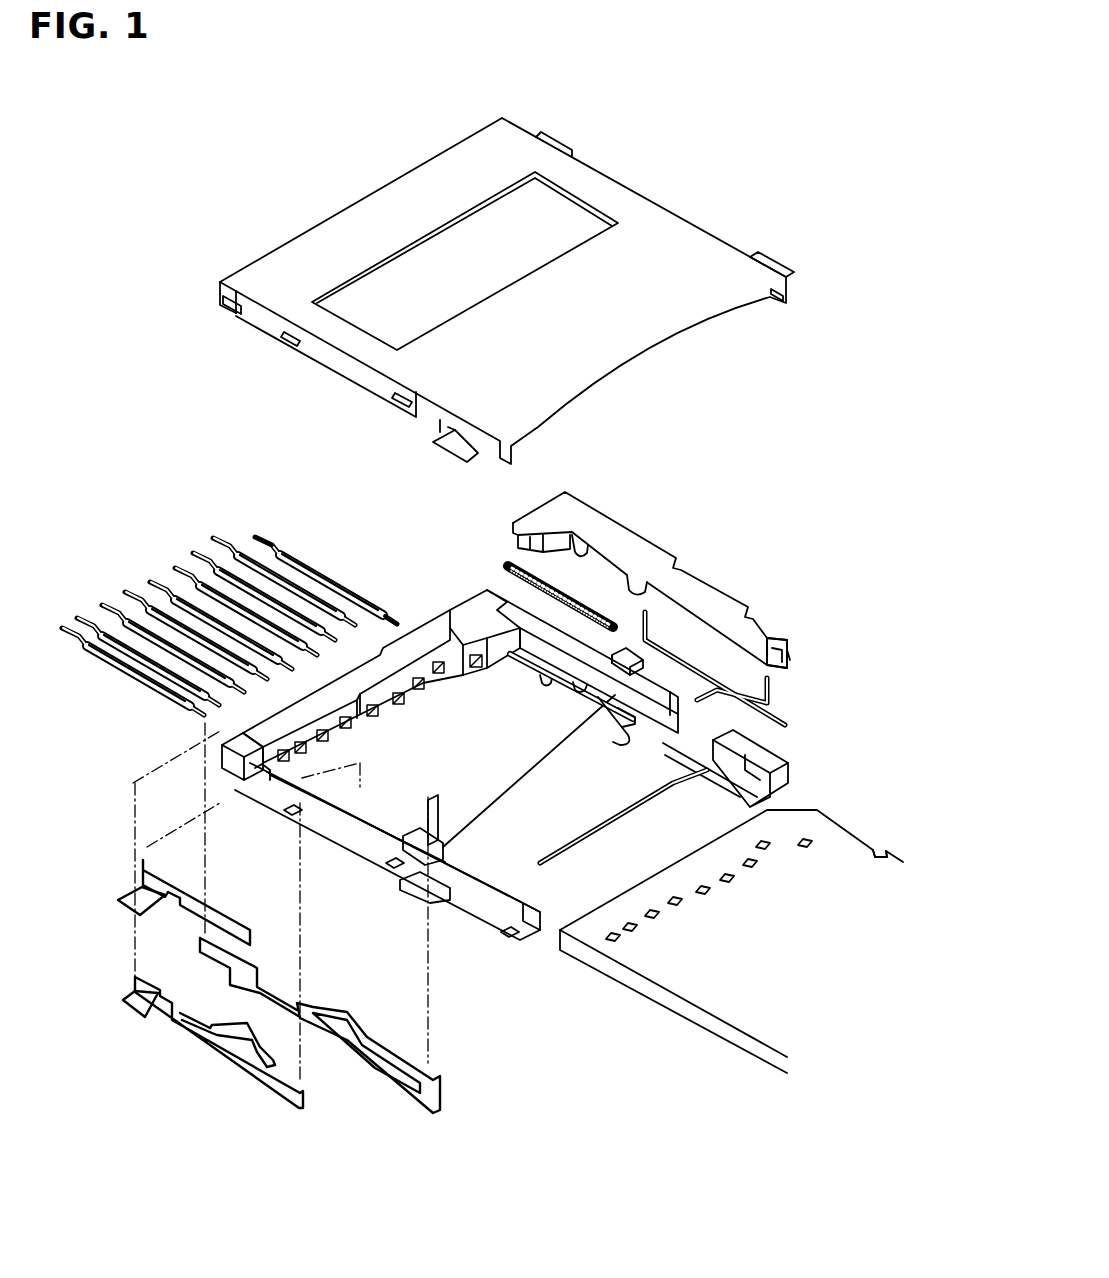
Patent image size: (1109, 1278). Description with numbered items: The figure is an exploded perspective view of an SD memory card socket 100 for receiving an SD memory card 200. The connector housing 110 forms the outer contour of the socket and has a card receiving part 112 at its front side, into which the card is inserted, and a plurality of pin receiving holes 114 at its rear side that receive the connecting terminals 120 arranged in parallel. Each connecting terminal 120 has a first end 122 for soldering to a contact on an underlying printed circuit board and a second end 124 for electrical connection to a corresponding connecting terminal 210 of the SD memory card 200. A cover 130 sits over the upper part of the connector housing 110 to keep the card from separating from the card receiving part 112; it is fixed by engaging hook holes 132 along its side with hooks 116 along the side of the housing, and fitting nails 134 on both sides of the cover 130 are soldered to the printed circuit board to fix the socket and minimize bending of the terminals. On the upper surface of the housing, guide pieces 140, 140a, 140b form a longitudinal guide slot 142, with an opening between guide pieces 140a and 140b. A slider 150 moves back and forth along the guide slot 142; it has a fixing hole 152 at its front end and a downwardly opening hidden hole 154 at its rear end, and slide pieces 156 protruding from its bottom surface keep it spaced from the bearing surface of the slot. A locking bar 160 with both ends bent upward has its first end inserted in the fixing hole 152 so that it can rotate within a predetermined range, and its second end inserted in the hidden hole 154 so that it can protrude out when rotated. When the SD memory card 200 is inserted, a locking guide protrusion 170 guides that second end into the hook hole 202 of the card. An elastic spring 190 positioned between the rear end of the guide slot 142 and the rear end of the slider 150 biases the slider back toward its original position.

The SD memory card socket 100 is at (752, 436).
The connector housing 110 is at (475, 935).
The card receiving part 112 is at (395, 812).
The pin receiving holes 114 is at (287, 787).
The hooks 116 is at (294, 814).
The connecting terminals 120 is at (297, 551).
The first end 122 is at (258, 536).
The second end 124 is at (399, 614).
The cover 130 is at (636, 200).
The hook holes 132 is at (775, 307).
The fitting nails 134 is at (449, 446).
The guide piece 140 is at (518, 636).
The guide piece 140a is at (683, 779).
The guide piece 140b is at (540, 652).
The guide slot 142 is at (573, 678).
The slider 150 is at (672, 549).
The fixing hole 152 is at (770, 645).
The hidden hole 154 is at (633, 562).
The slide pieces 156 is at (573, 536).
The locking bar 160 is at (701, 661).
The locking guide protrusion 170 is at (613, 745).
The elastic spring 190 is at (553, 580).
The SD memory card 200 is at (693, 995).
The hook hole 202 is at (880, 847).
The connecting terminals 210 is at (606, 940).